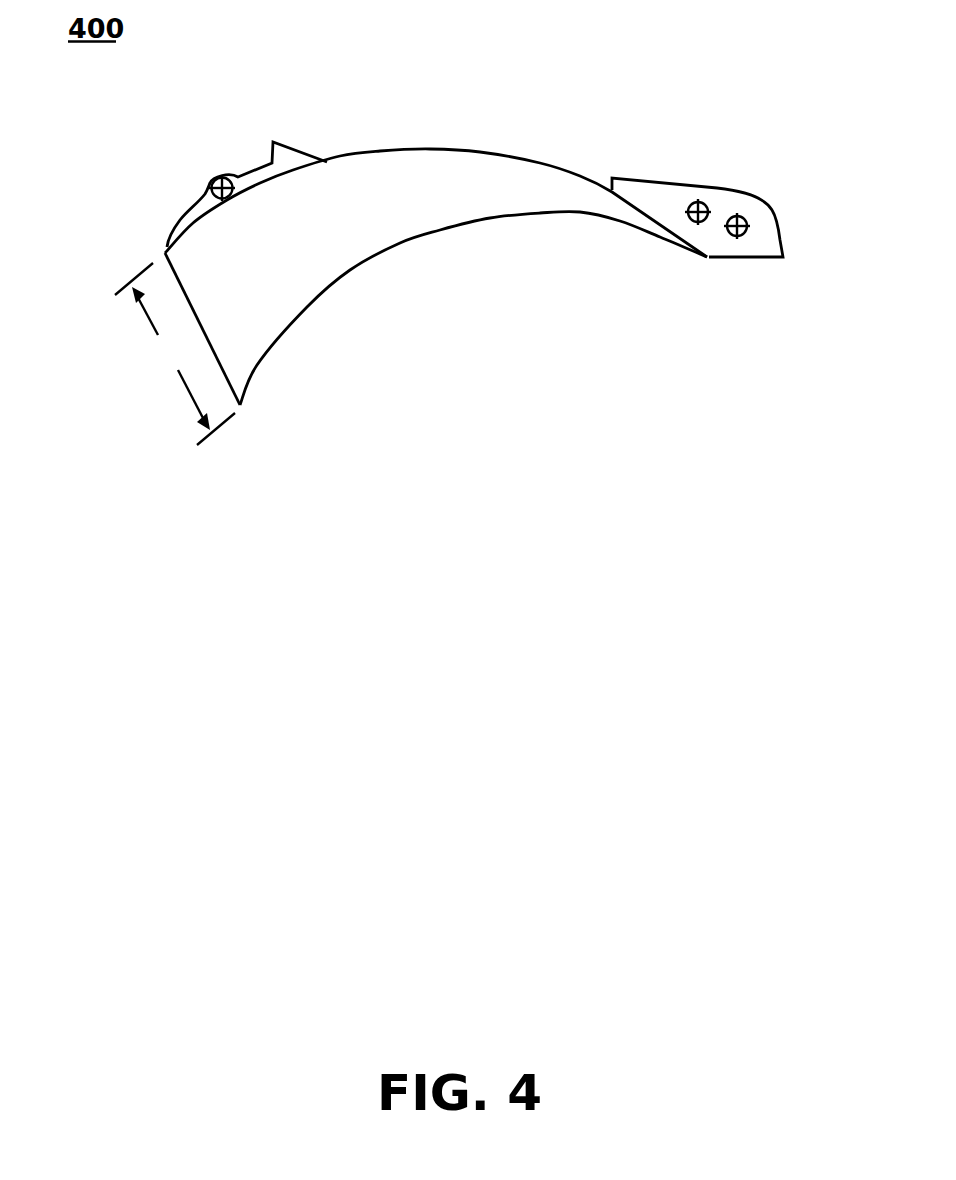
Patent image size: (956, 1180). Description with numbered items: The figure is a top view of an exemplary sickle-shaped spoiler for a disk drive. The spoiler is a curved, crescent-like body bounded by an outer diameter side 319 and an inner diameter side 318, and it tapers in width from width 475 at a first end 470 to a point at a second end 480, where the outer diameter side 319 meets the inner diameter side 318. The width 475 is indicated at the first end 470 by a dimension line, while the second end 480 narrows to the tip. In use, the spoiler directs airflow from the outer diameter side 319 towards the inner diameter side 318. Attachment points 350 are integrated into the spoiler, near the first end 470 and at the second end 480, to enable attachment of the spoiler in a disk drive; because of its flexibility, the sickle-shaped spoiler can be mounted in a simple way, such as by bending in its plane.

The outer diameter side 319 is at (420, 149).
The inner diameter side 318 is at (443, 229).
The first end 470 is at (257, 365).
The width 475 is at (175, 354).
The second end 480 is at (634, 219).
The attachment points 350 is at (210, 189).